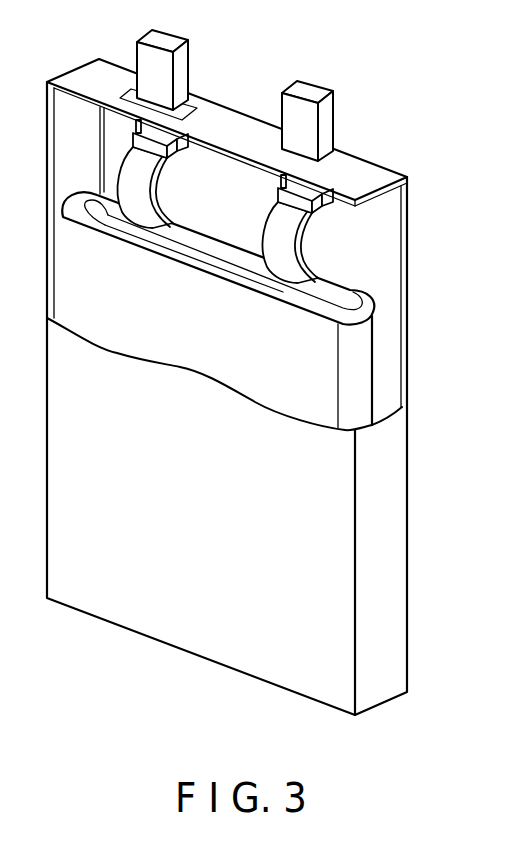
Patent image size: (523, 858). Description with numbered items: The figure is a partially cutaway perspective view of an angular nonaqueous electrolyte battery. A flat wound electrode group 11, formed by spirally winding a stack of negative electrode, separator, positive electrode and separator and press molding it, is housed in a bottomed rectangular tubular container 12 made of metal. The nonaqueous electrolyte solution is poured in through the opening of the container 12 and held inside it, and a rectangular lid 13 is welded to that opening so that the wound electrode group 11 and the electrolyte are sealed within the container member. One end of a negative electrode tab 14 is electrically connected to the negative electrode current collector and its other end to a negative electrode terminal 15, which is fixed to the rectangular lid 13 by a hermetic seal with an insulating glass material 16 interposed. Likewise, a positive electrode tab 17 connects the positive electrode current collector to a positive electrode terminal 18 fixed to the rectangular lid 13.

The wound electrode group 11 is at (395, 314).
The container 12 is at (388, 530).
The rectangular lid 13 is at (345, 165).
The negative electrode tab 14 is at (137, 188).
The negative electrode terminal 15 is at (180, 62).
The glass material 16 is at (192, 103).
The positive electrode tab 17 is at (283, 250).
The positive electrode terminal 18 is at (327, 122).